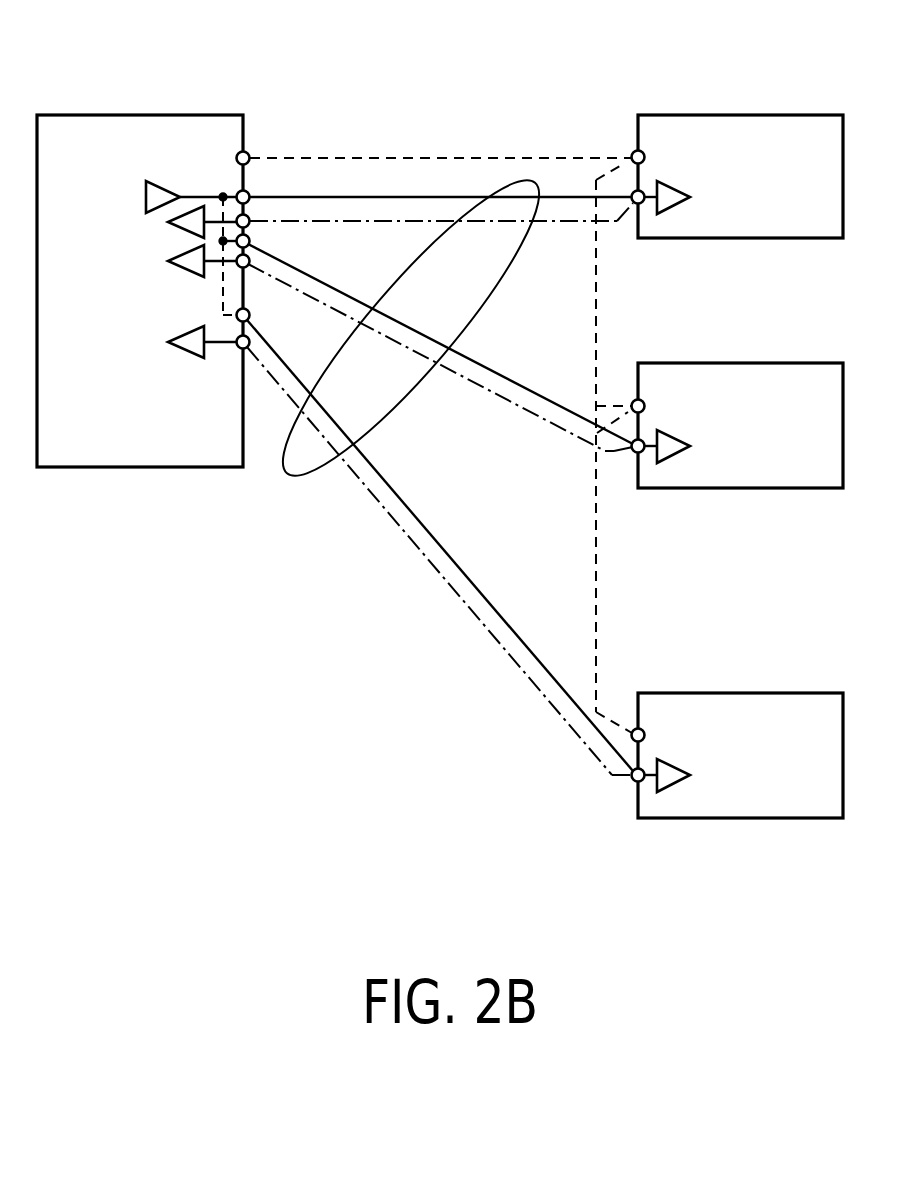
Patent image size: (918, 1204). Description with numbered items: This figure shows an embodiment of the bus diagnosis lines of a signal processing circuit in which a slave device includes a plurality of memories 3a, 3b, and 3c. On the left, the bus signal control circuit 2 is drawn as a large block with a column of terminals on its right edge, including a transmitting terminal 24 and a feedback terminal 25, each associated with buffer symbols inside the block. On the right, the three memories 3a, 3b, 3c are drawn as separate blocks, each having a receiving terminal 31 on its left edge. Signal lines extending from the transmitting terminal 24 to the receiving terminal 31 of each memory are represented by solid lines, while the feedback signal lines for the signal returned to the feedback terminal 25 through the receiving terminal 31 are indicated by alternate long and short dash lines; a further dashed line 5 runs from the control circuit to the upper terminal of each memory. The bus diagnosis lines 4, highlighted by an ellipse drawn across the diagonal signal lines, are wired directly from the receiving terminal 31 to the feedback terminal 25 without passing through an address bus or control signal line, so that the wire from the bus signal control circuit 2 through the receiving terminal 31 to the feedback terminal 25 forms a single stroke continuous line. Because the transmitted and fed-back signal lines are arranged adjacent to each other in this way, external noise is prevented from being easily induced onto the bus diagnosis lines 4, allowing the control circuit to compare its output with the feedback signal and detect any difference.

The bus signal control circuit 2 is at (213, 115).
The memory 3a is at (808, 115).
The memory 3b is at (808, 363).
The memory 3c is at (808, 693).
The bus diagnosis lines 4 is at (302, 475).
The chip select line 5 is at (440, 157).
The transmitting terminal 24 is at (252, 195).
The feedback terminal 25 is at (252, 224).
The receiving terminal 31 is at (632, 194).